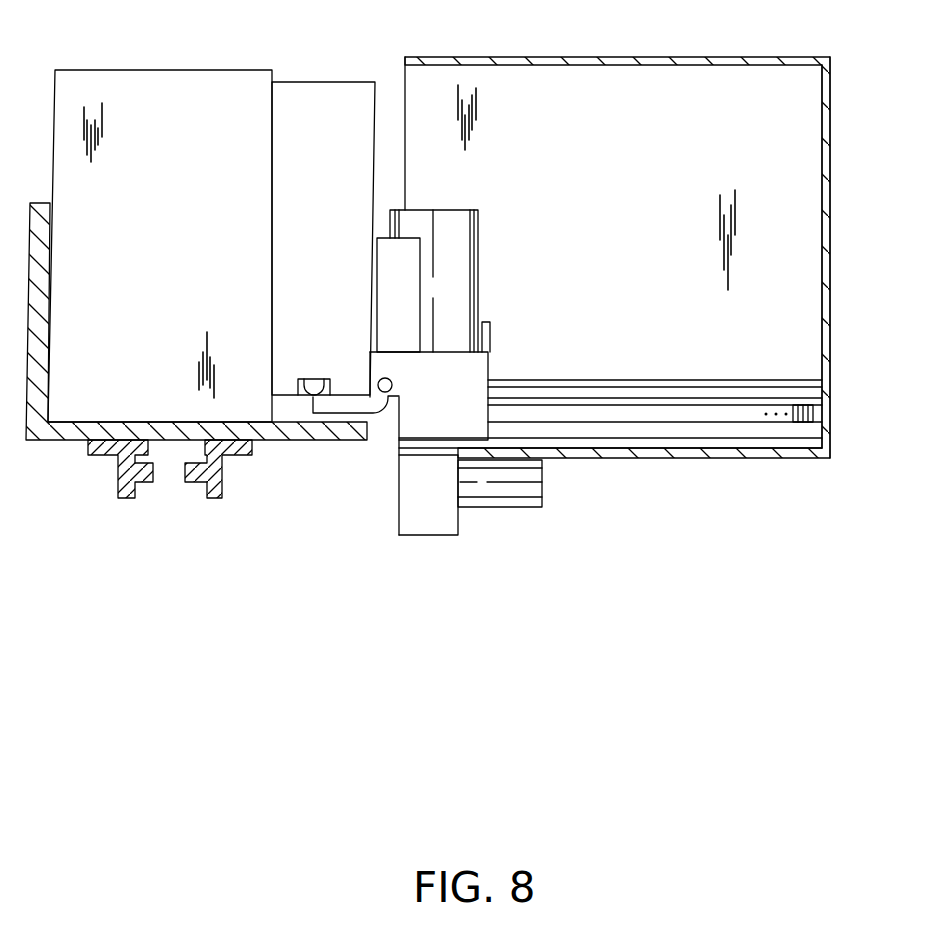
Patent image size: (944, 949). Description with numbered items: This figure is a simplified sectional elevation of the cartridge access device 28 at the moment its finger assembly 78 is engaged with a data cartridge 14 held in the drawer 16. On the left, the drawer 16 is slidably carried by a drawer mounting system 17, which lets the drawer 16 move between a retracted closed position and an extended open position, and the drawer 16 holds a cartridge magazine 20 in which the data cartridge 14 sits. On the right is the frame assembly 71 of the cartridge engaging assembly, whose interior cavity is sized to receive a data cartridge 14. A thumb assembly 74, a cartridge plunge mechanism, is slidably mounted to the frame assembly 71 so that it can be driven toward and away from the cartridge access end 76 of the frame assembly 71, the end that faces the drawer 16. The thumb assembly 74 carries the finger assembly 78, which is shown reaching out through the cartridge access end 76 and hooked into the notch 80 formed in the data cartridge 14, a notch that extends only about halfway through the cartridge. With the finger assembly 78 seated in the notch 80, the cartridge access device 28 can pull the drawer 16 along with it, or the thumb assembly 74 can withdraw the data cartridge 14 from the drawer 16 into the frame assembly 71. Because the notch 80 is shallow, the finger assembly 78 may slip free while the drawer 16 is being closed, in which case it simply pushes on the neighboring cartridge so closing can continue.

The data cartridge 14 is at (333, 80).
The drawer 16 is at (53, 440).
The drawer mounting system 17 is at (225, 455).
The cartridge magazine 20 is at (211, 70).
The cartridge access device 28 is at (840, 107).
The frame assembly 71 is at (688, 58).
The thumb assembly 74 is at (443, 205).
The cartridge access end 76 is at (404, 90).
The finger assembly 78 is at (317, 437).
The notch 80 is at (317, 387).